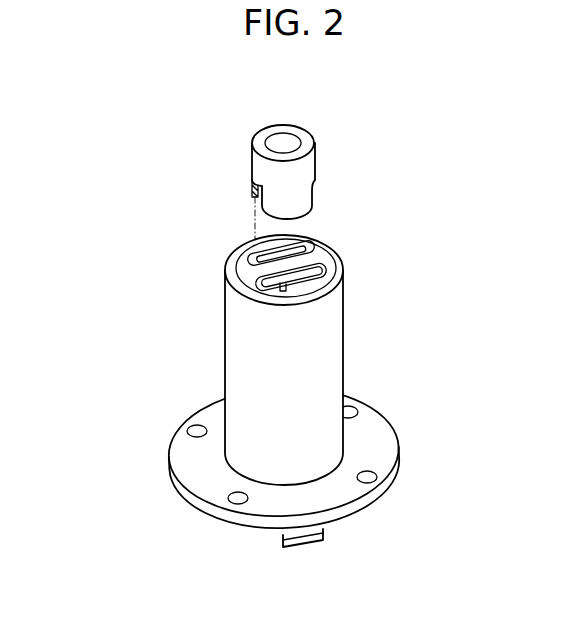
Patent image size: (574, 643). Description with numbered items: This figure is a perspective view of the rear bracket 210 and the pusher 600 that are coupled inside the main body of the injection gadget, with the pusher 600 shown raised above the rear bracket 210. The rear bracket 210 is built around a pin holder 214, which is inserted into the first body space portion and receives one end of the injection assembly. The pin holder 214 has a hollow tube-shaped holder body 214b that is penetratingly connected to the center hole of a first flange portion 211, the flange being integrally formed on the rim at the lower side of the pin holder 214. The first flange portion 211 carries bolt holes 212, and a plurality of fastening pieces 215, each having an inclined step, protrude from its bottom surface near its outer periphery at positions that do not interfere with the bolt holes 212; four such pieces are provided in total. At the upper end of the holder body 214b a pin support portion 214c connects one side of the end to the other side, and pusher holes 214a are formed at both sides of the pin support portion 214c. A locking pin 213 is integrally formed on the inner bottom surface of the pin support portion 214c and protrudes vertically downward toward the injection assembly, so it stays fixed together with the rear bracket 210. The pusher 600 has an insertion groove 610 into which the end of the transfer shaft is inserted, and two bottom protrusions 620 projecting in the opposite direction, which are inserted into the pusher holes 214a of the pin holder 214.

The pusher 600 is at (274, 182).
The insertion groove 610 is at (302, 143).
The bottom protrusions 620 is at (310, 202).
The rear bracket 210 is at (253, 474).
The first flange portion 211 is at (184, 487).
The bolt holes 212 is at (376, 474).
The locking pin 213 is at (258, 284).
The pin holder 214 is at (281, 354).
The pusher holes 214a is at (256, 250).
The holder body 214b is at (344, 338).
The pin support portion 214c is at (285, 265).
The fastening pieces 215 is at (325, 540).